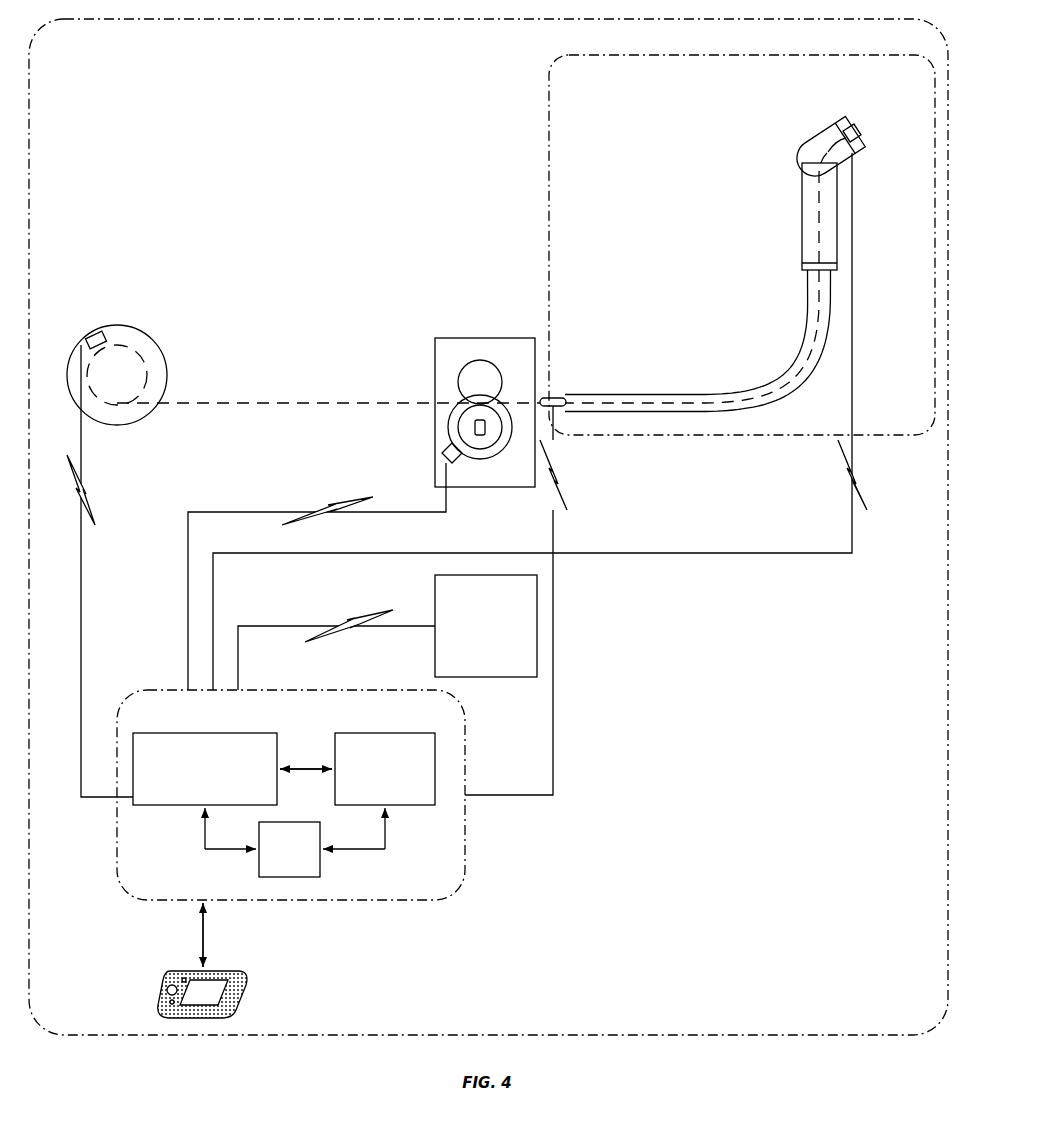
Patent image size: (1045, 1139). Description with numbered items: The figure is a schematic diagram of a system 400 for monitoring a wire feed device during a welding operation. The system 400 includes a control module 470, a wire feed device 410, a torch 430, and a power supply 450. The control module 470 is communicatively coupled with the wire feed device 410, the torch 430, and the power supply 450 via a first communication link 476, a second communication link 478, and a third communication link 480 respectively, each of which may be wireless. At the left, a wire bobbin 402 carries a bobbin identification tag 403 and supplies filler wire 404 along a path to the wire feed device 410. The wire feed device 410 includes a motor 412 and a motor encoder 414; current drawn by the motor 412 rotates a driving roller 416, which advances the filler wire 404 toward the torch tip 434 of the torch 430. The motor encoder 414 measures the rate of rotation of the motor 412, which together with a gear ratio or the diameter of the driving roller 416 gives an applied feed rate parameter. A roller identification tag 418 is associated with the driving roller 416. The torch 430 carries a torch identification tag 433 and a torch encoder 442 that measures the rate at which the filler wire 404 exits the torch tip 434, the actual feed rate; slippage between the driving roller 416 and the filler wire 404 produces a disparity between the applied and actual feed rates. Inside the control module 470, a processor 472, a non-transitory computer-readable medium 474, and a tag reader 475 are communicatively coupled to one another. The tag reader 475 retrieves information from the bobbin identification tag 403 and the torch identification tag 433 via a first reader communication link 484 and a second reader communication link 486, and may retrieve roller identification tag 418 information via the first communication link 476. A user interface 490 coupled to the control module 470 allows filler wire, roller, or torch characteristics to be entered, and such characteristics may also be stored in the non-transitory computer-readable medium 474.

The system 400 is at (488, 517).
The reservoir 402 is at (158, 338).
The bobbin identification tag 403 is at (95, 331).
The filler wire 404 is at (260, 401).
The wire feed device 410 is at (485, 336).
The motor 412 is at (446, 425).
The motor encoder 414 is at (440, 453).
The driving roller 416 is at (459, 393).
The roller identification tag 418 is at (489, 428).
The torch 430 is at (742, 237).
The torch identification tag 433 is at (553, 394).
The torch tip 434 is at (860, 151).
The torch encoder 442 is at (849, 123).
The power supply 450 is at (486, 626).
The control module 470 is at (290, 903).
The processor 472 is at (379, 791).
The non-transitory computer-readable medium 474 is at (232, 791).
The tag reader 475 is at (289, 849).
The first communication link 476 is at (331, 503).
The second communication link 478 is at (846, 474).
The third communication link 480 is at (350, 621).
The first reader communication link 484 is at (80, 497).
The second reader communication link 486 is at (558, 478).
The user interface 490 is at (155, 997).